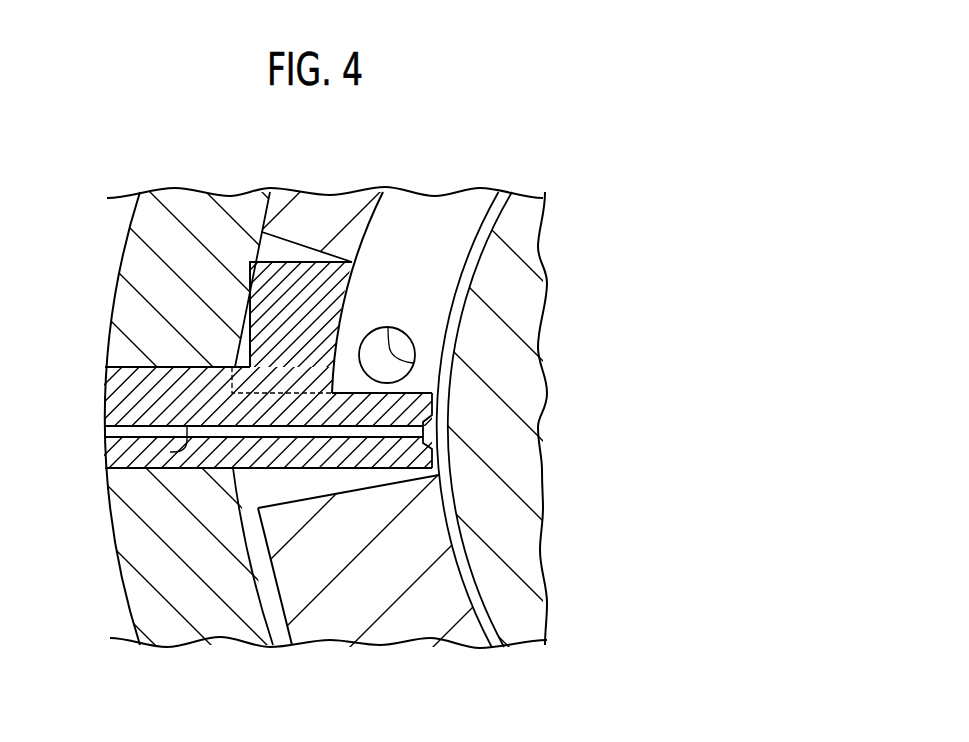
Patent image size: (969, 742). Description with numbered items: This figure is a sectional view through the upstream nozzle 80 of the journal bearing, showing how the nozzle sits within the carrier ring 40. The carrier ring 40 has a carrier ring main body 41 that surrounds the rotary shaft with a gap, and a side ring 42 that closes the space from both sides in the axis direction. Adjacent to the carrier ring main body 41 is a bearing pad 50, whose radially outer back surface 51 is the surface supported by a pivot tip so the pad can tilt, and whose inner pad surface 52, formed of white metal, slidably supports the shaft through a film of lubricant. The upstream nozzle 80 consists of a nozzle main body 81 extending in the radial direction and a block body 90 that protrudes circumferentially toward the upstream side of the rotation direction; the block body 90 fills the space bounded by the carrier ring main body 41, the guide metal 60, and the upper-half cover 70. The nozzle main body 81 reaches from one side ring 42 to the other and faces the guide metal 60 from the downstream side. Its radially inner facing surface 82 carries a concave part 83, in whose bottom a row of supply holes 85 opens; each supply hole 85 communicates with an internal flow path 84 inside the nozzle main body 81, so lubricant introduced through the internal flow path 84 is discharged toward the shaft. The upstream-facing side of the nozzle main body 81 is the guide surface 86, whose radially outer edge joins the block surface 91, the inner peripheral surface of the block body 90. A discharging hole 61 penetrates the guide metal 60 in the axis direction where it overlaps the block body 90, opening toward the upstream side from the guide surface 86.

The carrier ring 40 is at (126, 612).
The carrier ring main body 41 is at (163, 588).
The side ring 42 is at (282, 492).
The bearing pad 50 is at (371, 597).
The back surface 51 is at (280, 603).
The pad surface 52 is at (467, 570).
The guide metal 60 is at (458, 231).
The discharging hole 61 is at (413, 363).
The upper-half cover 70 is at (335, 213).
The upstream nozzle 80 is at (172, 366).
The nozzle main body 81 is at (142, 402).
The facing surface 82 is at (443, 462).
The concave part 83 is at (425, 430).
The internal flow path 84 is at (170, 452).
The supply hole 85 is at (425, 436).
The guide surface 86 is at (439, 380).
The block body 90 is at (280, 297).
The block surface 91 is at (350, 295).